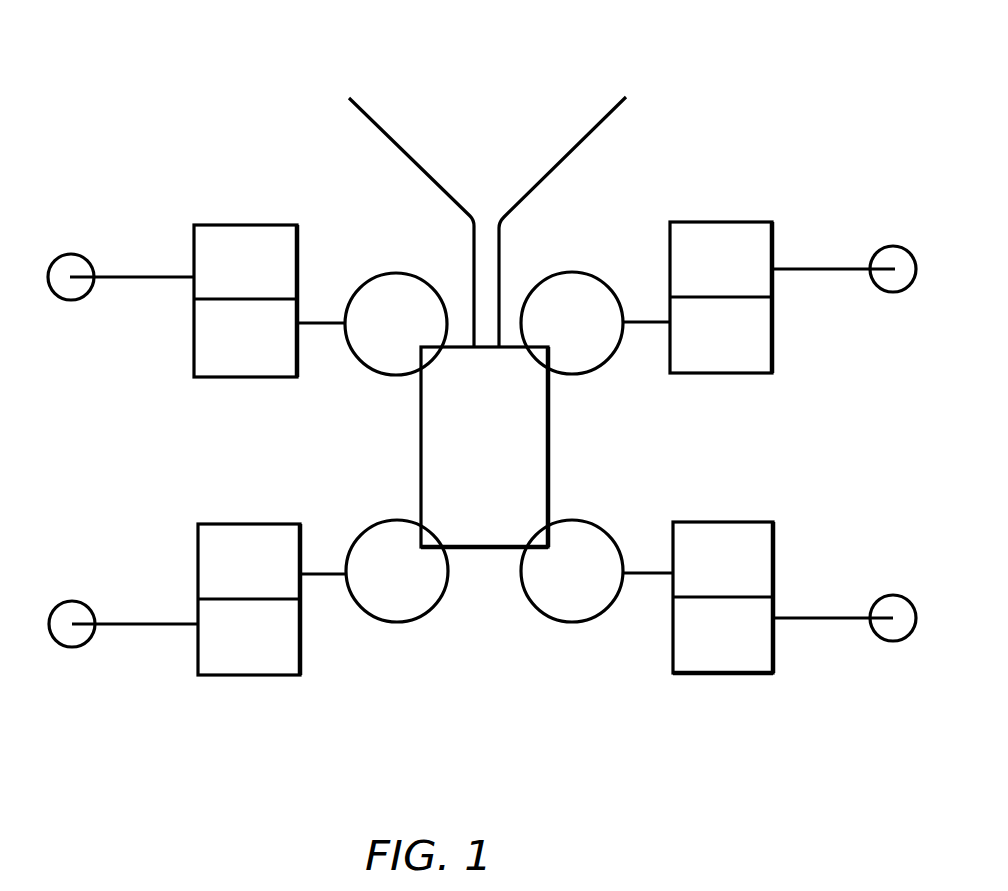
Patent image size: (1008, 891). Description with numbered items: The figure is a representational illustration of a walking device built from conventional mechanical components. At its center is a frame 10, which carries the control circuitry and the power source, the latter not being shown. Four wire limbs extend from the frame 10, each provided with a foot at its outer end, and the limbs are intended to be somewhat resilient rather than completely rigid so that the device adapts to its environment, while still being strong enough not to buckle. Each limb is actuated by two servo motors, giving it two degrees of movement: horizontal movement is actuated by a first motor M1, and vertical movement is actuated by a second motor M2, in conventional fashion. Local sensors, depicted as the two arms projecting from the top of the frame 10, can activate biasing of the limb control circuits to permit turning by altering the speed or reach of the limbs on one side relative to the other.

The frame 10 is at (421, 423).
The first servo motor M1 is at (586, 623).
The second servo motor M2 is at (775, 674).